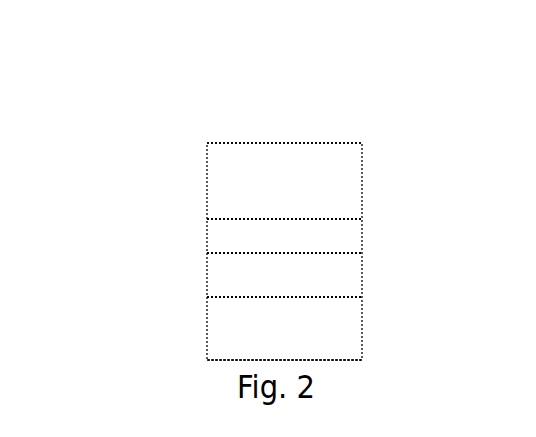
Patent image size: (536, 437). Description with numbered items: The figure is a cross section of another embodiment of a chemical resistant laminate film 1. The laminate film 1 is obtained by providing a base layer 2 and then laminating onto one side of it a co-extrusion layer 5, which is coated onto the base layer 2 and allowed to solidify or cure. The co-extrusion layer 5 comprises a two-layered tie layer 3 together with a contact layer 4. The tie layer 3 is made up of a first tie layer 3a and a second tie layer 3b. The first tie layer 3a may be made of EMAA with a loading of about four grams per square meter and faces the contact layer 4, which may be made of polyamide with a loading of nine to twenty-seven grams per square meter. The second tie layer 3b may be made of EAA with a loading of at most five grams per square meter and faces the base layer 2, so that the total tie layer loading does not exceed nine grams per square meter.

The laminate film 1 is at (327, 109).
The base layer 2 is at (206, 144).
The tie layer 3 is at (195, 222).
The first tie layer 3a is at (195, 273).
The second tie layer 3b is at (195, 236).
The contact layer 4 is at (205, 323).
The co-extrusion layer 5 is at (362, 215).